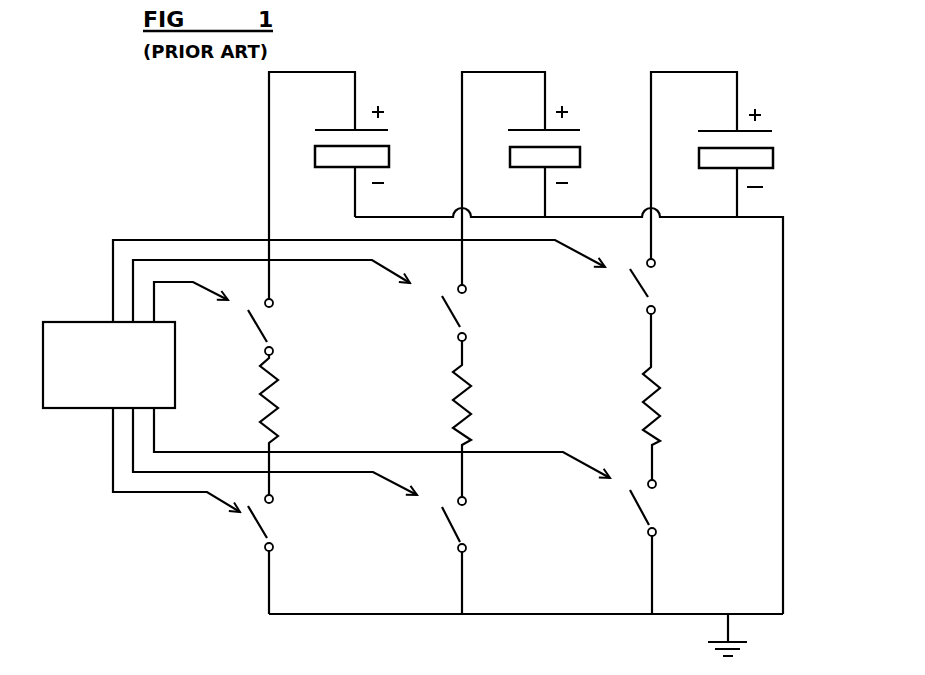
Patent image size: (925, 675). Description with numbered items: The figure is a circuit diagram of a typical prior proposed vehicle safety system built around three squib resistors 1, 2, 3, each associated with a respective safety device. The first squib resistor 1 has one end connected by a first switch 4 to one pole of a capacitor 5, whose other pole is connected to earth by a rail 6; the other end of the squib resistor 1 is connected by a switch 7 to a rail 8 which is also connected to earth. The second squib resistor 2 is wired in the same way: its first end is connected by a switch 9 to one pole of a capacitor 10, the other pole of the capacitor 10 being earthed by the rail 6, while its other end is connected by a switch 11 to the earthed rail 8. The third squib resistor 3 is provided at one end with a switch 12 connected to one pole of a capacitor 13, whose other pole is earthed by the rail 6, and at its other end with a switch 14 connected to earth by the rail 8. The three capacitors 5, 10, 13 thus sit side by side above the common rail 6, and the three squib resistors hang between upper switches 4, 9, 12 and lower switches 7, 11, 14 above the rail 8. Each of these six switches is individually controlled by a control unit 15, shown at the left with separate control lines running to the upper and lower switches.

The squib resistor 1 is at (277, 392).
The squib resistor 2 is at (467, 395).
The squib resistor 3 is at (650, 403).
The first switch 4 is at (263, 330).
The capacitor 5 is at (393, 128).
The rail 6 is at (783, 363).
The switch 7 is at (265, 530).
The rail 8 is at (560, 614).
The switch 9 is at (455, 324).
The capacitor 10 is at (572, 128).
The switch 11 is at (452, 527).
The switch 12 is at (647, 297).
The capacitor 13 is at (775, 127).
The switch 14 is at (640, 507).
The control unit 15 is at (80, 318).